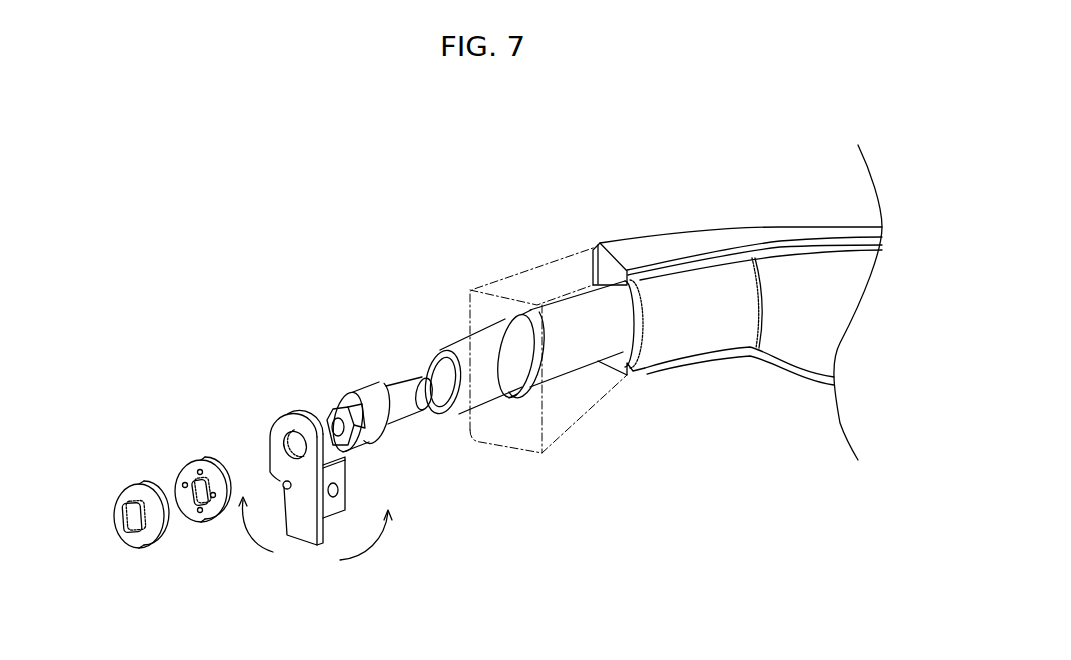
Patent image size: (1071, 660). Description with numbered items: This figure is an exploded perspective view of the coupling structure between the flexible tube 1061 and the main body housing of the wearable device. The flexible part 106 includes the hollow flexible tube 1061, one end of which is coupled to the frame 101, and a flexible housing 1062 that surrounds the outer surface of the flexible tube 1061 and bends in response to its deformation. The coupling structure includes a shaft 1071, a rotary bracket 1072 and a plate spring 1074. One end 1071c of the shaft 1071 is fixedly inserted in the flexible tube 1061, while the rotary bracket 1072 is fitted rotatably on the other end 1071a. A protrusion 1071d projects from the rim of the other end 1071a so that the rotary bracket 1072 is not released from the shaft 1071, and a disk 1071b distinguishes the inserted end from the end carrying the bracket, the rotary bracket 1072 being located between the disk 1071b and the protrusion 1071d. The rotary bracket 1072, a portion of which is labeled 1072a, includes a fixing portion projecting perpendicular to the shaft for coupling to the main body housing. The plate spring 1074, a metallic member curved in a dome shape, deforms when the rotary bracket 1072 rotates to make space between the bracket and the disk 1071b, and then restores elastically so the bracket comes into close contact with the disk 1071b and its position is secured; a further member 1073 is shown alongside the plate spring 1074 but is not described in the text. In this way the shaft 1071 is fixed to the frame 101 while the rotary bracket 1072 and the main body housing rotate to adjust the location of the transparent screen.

The frame 101 is at (700, 347).
The flexible part 106 is at (533, 410).
The flexible tube 1061 is at (495, 383).
The flexible housing 1062 is at (583, 403).
The shaft 1071 is at (354, 341).
The other end of the shaft 1071a is at (348, 410).
The disk 1071b is at (358, 406).
The one end of the shaft 1071c is at (416, 352).
The protrusion 1071d is at (328, 420).
The rotary bracket 1072 is at (289, 479).
The bracket plate 1072a is at (300, 532).
The washer plate 1073 is at (189, 470).
The plate spring 1074 is at (122, 494).